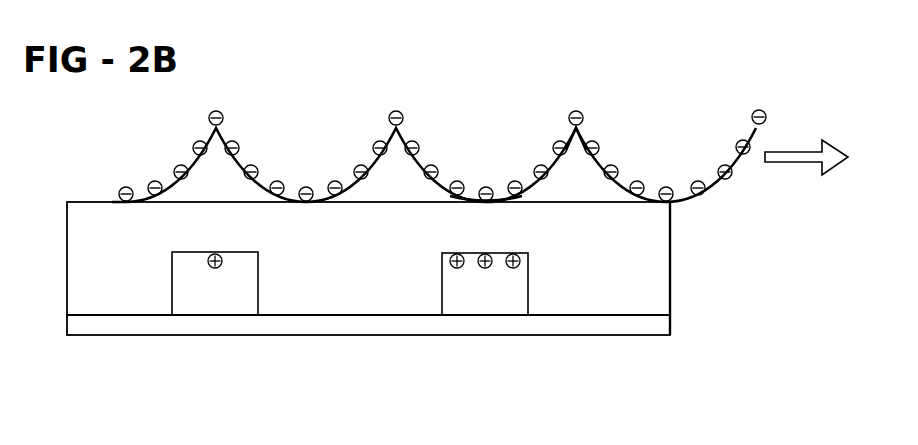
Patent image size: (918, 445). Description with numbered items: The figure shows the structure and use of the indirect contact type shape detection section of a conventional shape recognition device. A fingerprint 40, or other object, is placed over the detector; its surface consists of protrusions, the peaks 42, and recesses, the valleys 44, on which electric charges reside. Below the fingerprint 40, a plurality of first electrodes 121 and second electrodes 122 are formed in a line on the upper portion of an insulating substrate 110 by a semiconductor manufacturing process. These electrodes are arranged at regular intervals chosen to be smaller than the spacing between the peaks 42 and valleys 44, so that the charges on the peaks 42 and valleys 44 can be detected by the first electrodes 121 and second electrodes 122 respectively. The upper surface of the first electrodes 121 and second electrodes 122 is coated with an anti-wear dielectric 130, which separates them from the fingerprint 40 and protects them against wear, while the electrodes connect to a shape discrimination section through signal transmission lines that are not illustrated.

The fingerprint 40 is at (702, 145).
The peaks 42 is at (488, 197).
The valleys 44 is at (586, 120).
The insulating substrate 110 is at (77, 320).
The first electrodes 121 is at (207, 300).
The second electrodes 122 is at (483, 300).
The anti-wear dielectric 130 is at (82, 235).